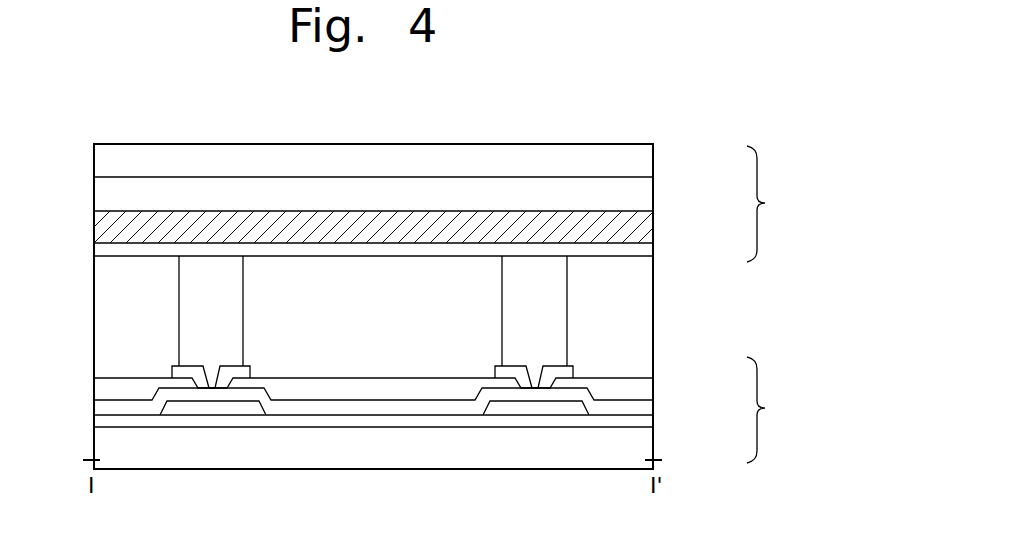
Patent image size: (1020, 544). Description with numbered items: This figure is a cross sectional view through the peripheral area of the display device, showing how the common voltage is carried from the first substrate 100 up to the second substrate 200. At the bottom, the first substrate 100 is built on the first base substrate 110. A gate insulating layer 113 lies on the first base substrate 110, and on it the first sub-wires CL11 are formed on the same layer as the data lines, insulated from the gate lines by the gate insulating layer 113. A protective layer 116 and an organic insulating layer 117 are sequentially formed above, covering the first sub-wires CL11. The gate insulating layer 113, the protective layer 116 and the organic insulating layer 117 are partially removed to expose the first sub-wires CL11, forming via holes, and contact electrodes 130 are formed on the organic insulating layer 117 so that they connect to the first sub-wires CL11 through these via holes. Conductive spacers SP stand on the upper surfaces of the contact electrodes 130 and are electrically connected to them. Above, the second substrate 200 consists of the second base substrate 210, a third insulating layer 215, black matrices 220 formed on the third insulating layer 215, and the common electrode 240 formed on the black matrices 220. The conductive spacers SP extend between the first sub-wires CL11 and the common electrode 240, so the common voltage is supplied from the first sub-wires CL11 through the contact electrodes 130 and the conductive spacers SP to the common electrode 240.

The second base substrate 210 is at (643, 157).
The third insulating layer 215 is at (643, 192).
The black matrix 220 is at (643, 222).
The common electrode 240 is at (643, 250).
The second substrate 200 is at (776, 204).
The conductive spacer SP is at (558, 318).
The organic insulating layer 117 is at (653, 388).
The protective layer 116 is at (645, 407).
The gate insulating layer 113 is at (645, 420).
The first base substrate 110 is at (645, 447).
The first substrate 100 is at (776, 410).
The first sub-wire CL11 is at (213, 407).
The contact electrode 130 is at (533, 407).